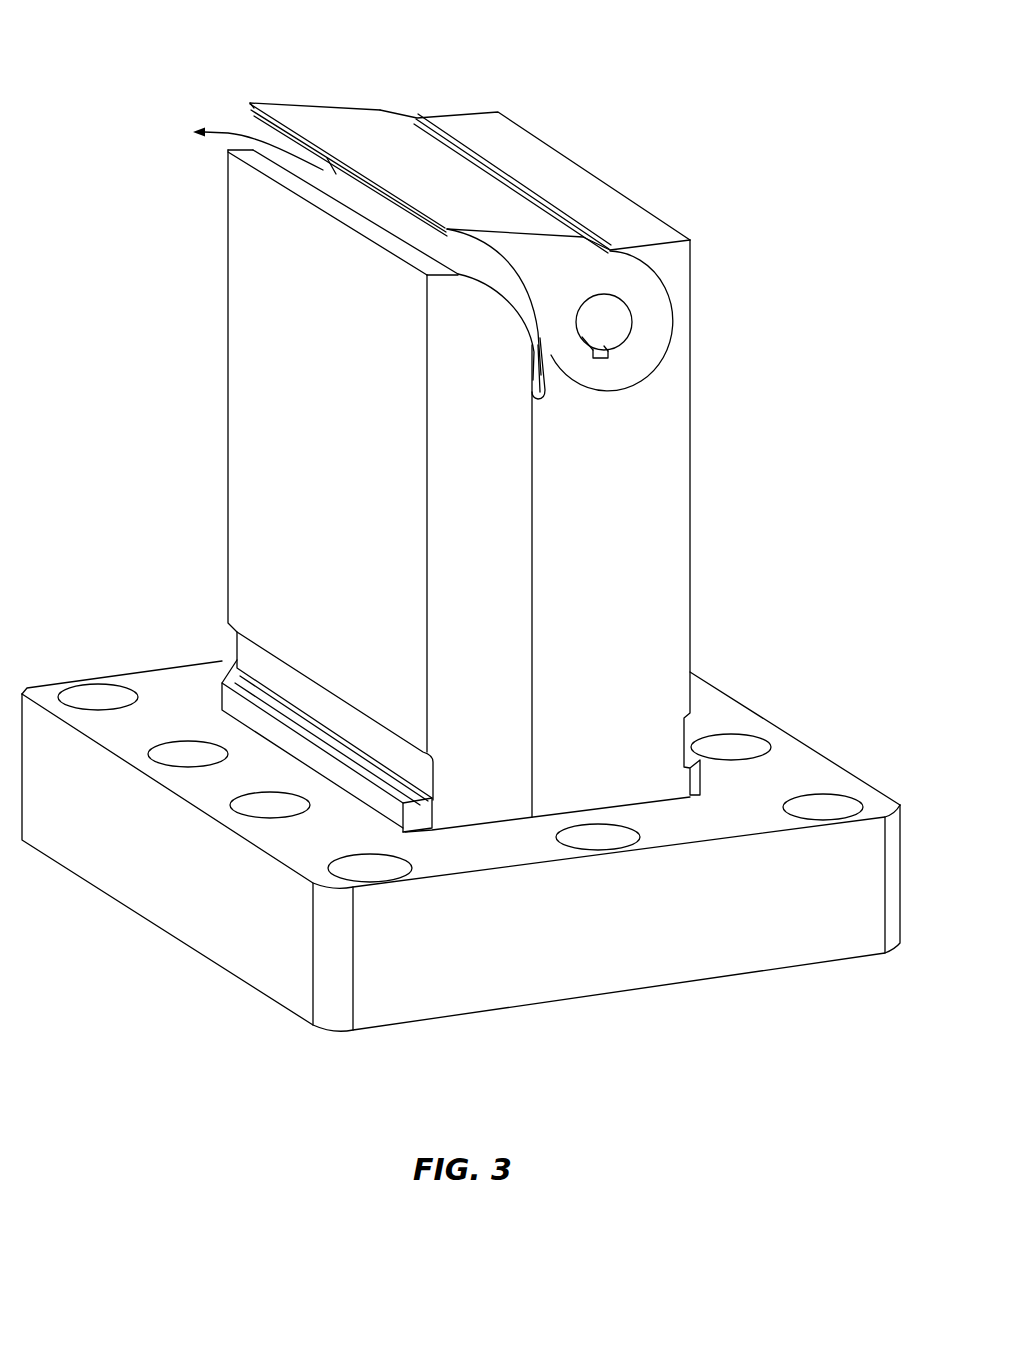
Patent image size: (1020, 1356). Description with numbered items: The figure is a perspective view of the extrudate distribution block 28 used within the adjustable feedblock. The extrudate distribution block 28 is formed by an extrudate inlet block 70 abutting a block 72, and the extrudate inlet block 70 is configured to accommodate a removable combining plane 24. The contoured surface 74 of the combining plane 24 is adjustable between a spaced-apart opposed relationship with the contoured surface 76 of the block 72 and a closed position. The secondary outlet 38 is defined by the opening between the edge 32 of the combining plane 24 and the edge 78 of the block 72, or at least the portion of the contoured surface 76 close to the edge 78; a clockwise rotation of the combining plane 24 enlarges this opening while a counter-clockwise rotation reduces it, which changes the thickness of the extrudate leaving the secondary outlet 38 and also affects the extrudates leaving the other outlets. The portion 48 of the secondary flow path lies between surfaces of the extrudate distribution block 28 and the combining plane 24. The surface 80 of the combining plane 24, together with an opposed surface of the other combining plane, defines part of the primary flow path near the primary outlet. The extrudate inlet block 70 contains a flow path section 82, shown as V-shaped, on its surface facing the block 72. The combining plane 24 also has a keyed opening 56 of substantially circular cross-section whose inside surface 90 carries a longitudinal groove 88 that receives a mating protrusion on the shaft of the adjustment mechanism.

The combining plane 24 is at (623, 375).
The extrudate distribution block 28 is at (790, 317).
The edge 32 is at (353, 167).
The secondary outlet 38 is at (222, 111).
The portion of secondary flow path 48 is at (228, 133).
The keyed opening 56 is at (610, 326).
The extrudate inlet block 70 is at (690, 520).
The block 72 is at (228, 530).
The contoured surface 74 is at (373, 200).
The contoured surface 76 is at (493, 292).
The edge 78 is at (270, 177).
The surface 80 is at (337, 132).
The flow path section 82 is at (553, 405).
The groove 88 is at (603, 357).
The inside surface 90 is at (618, 308).